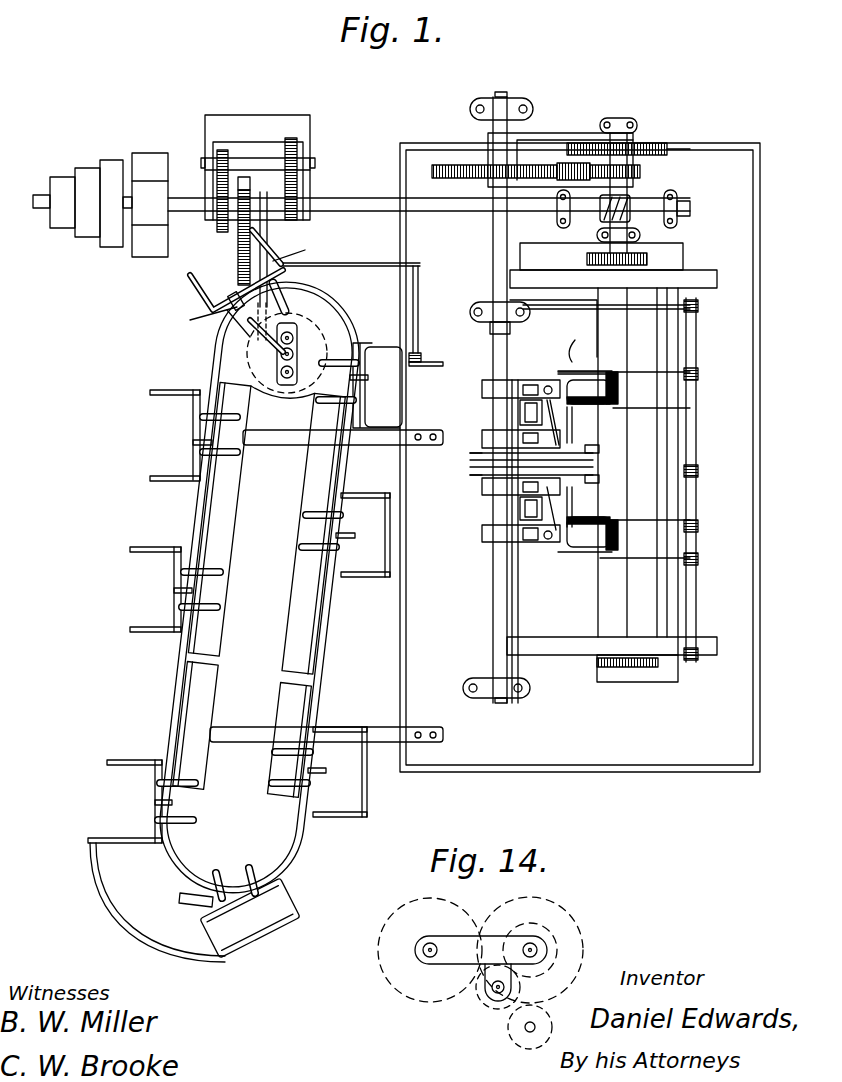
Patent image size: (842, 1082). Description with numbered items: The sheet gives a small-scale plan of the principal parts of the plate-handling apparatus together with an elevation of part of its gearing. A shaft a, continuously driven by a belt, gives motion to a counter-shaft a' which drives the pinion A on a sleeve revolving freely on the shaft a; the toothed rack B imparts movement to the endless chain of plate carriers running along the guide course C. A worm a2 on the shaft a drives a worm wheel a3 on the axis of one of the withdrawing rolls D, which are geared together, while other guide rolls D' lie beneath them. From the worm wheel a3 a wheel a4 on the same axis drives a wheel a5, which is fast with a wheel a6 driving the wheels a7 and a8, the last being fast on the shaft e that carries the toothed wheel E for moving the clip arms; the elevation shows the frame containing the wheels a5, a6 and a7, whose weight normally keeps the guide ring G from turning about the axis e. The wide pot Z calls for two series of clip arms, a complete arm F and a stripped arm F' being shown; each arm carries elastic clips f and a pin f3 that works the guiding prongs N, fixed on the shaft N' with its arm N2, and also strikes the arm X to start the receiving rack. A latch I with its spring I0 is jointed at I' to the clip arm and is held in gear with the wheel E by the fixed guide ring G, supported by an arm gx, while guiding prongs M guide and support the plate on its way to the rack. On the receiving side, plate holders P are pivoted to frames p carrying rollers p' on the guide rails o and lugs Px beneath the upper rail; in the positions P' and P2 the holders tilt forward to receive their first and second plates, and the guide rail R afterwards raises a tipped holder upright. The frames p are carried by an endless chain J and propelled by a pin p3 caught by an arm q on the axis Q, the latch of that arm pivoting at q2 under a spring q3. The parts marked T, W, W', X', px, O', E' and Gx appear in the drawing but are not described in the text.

In FIG. 1, the shaft a is at (361, 205).
In FIG. 1, the counter-shaft a' is at (258, 173).
In FIG. 1, the worm a2 is at (630, 200).
In FIG. 1, the worm wheel a3 is at (648, 233).
In FIG. 1, the wheel a4 is at (640, 143).
In FIG. 14, the wheel a4 is at (562, 1025).
In FIG. 1, the wheel a5 is at (667, 150).
In FIG. 14, the wheel a5 is at (578, 928).
In FIG. 1, the wheel a6 is at (640, 172).
In FIG. 14, the wheel a6 is at (558, 984).
In FIG. 1, the wheel a7 is at (563, 163).
In FIG. 14, the wheel a7 is at (497, 1000).
In FIG. 1, the wheel a8 is at (446, 165).
In FIG. 14, the wheel a8 is at (398, 913).
In FIG. 1, the pinion A is at (278, 252).
In FIG. 1, the toothed rack B is at (238, 256).
In FIG. 1, the rod T is at (267, 222).
In FIG. 1, the link W is at (292, 253).
In FIG. 1, the connecting rod W' is at (351, 255).
In FIG. 1, the arm X is at (426, 354).
In FIG. 1, the rod X' is at (422, 313).
In FIG. 1, the plate holder P is at (244, 625).
In FIG. 1, the plate holder position P' is at (352, 338).
In FIG. 1, the projecting lug Px is at (261, 651).
In FIG. 1, the plate holder position P2 is at (412, 560).
In FIG. 1, the frame p is at (259, 612).
In FIG. 1, the roller p' is at (252, 635).
In FIG. 1, the pin p3 is at (207, 318).
In FIG. 1, the collar px is at (236, 296).
In FIG. 1, the arm q is at (246, 337).
In FIG. 1, the latch pivot q2 is at (221, 328).
In FIG. 1, the spring q3 is at (266, 346).
In FIG. 1, the axis Q is at (297, 360).
In FIG. 1, the guide rail o is at (215, 362).
In FIG. 1, the track end O' is at (161, 872).
In FIG. 1, the guide course C is at (259, 589).
In FIG. 1, the guide ring G is at (475, 453).
In FIG. 1, the supporting arm gx is at (440, 468).
In FIG. 1, the toothed wheel E is at (465, 475).
In FIG. 1, the frame arm E' is at (468, 377).
In FIG. 1, the clip arm F is at (509, 541).
In FIG. 1, the clip arm F' is at (473, 377).
In FIG. 1, the guide rail R is at (157, 902).
In FIG. 1, the endless chain J is at (195, 905).
In FIG. 1, the pot Z is at (580, 457).
In FIG. 1, the shaft e is at (493, 242).
In FIG. 1, the withdrawing roll D is at (612, 462).
In FIG. 1, the guide roll D' is at (688, 471).
In FIG. 1, the guiding prong N is at (628, 480).
In FIG. 1, the shaft N' is at (615, 354).
In FIG. 1, the arm N2 is at (698, 307).
In FIG. 1, the bearing Gx is at (470, 312).
In FIG. 1, the clip f is at (618, 392).
In FIG. 1, the pin f3 is at (575, 343).
In FIG. 1, the latch I is at (564, 465).
In FIG. 1, the latch joint I' is at (538, 488).
In FIG. 1, the latch spring I0 is at (520, 412).
In FIG. 1, the guiding prong M is at (578, 404).